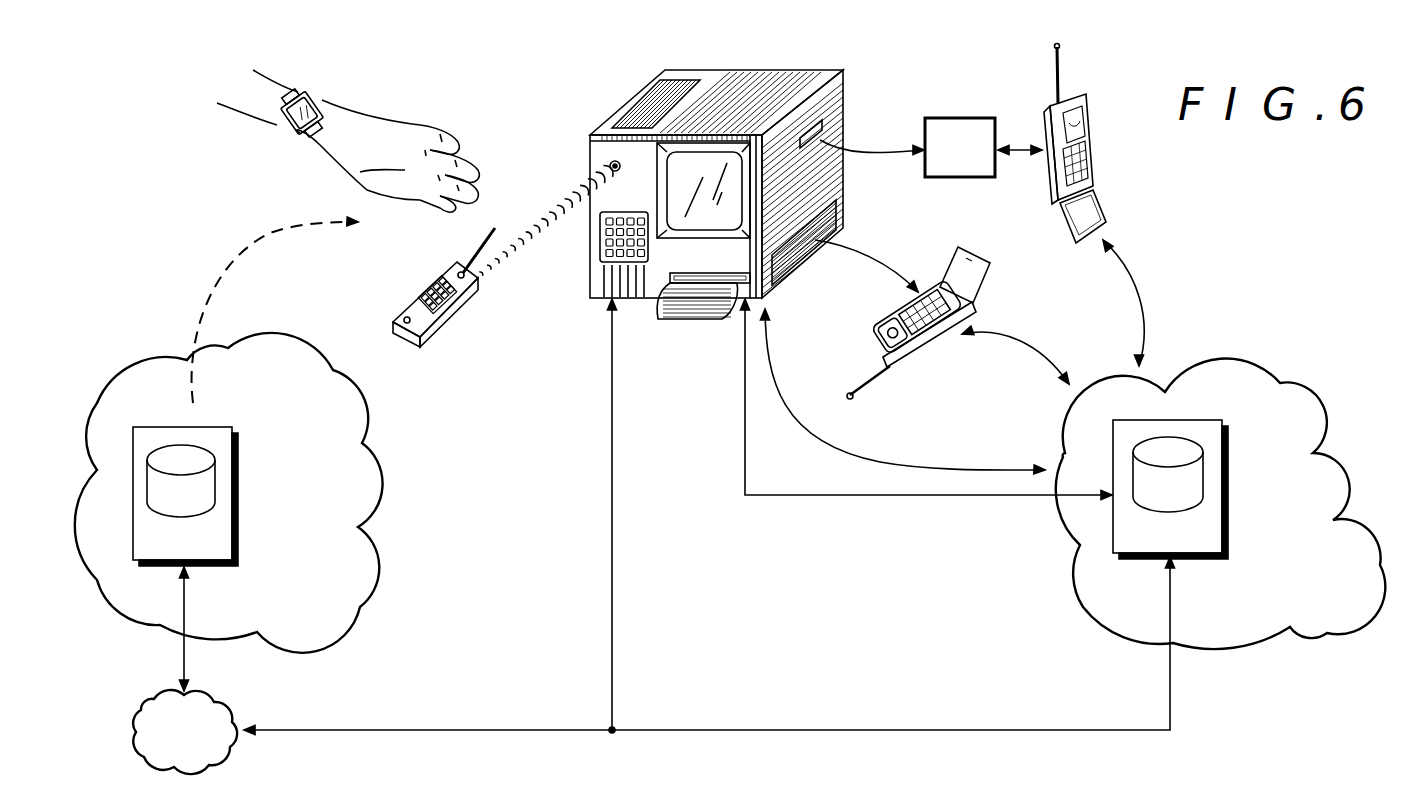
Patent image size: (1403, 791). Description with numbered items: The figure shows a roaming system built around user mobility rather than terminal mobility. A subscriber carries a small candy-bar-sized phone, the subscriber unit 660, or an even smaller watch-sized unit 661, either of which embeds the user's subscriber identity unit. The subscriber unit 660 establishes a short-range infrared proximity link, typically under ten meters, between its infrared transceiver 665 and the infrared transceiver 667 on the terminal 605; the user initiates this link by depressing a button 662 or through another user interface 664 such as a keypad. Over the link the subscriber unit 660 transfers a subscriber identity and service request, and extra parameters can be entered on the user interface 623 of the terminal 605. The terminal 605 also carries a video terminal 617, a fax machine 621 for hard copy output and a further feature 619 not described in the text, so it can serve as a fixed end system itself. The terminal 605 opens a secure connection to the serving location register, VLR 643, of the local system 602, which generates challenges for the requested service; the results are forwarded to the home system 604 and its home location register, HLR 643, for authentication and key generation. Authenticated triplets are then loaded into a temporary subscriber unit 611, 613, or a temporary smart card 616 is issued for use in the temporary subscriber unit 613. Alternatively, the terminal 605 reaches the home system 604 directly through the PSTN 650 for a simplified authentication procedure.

The local system 602 is at (1223, 358).
The home system 604 is at (374, 458).
The terminal 605 is at (760, 68).
The temporary subscriber unit 611 is at (976, 290).
The temporary subscriber unit 613 is at (1055, 72).
The temporary smart card 616 is at (962, 118).
The video terminal 617 is at (660, 165).
The card slot 619 is at (667, 78).
The fax machine 621 is at (717, 321).
The user interface 623 is at (608, 268).
The location register 643 is at (220, 436).
The PSTN 650 is at (215, 770).
The subscriber unit 660 is at (437, 295).
The watch-sized unit 661 is at (314, 90).
The button 662 is at (402, 317).
The user interface 664 is at (433, 283).
The infrared transceiver 665 is at (478, 288).
The infrared transceiver 667 is at (608, 162).